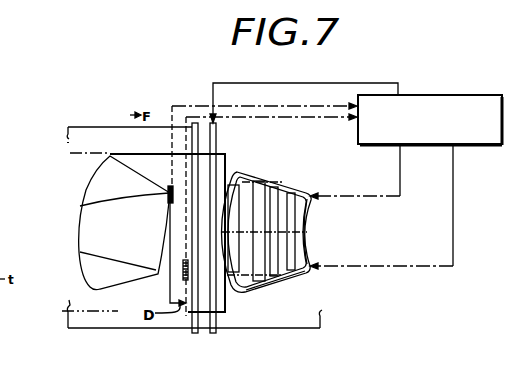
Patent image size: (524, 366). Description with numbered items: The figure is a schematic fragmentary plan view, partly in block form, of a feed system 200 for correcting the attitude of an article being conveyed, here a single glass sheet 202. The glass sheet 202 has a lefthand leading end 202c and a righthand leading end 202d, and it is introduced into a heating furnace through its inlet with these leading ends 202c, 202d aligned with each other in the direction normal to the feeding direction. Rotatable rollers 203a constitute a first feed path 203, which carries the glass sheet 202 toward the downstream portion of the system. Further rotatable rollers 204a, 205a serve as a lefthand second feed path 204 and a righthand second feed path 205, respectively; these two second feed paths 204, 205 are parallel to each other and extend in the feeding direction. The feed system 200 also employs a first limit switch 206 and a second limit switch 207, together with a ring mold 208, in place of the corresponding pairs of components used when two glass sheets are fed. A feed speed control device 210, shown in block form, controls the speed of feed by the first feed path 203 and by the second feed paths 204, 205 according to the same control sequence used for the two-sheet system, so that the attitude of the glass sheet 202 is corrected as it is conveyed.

The feed system 200 is at (165, 90).
The glass sheet 202 is at (93, 187).
The lefthand leading end 202c is at (80, 206).
The righthand leading end 202d is at (80, 252).
The first feed path 203 is at (97, 153).
The rotatable rollers 203a is at (216, 324).
The lefthand second feed path 204 is at (252, 180).
The rotatable rollers 204a is at (309, 211).
The righthand second feed path 205 is at (283, 284).
The rotatable rollers 205a is at (305, 249).
The first limit switch 206 is at (182, 188).
The second limit switch 207 is at (183, 278).
The ring mold 208 is at (267, 180).
The feed speed control device 210 is at (490, 147).